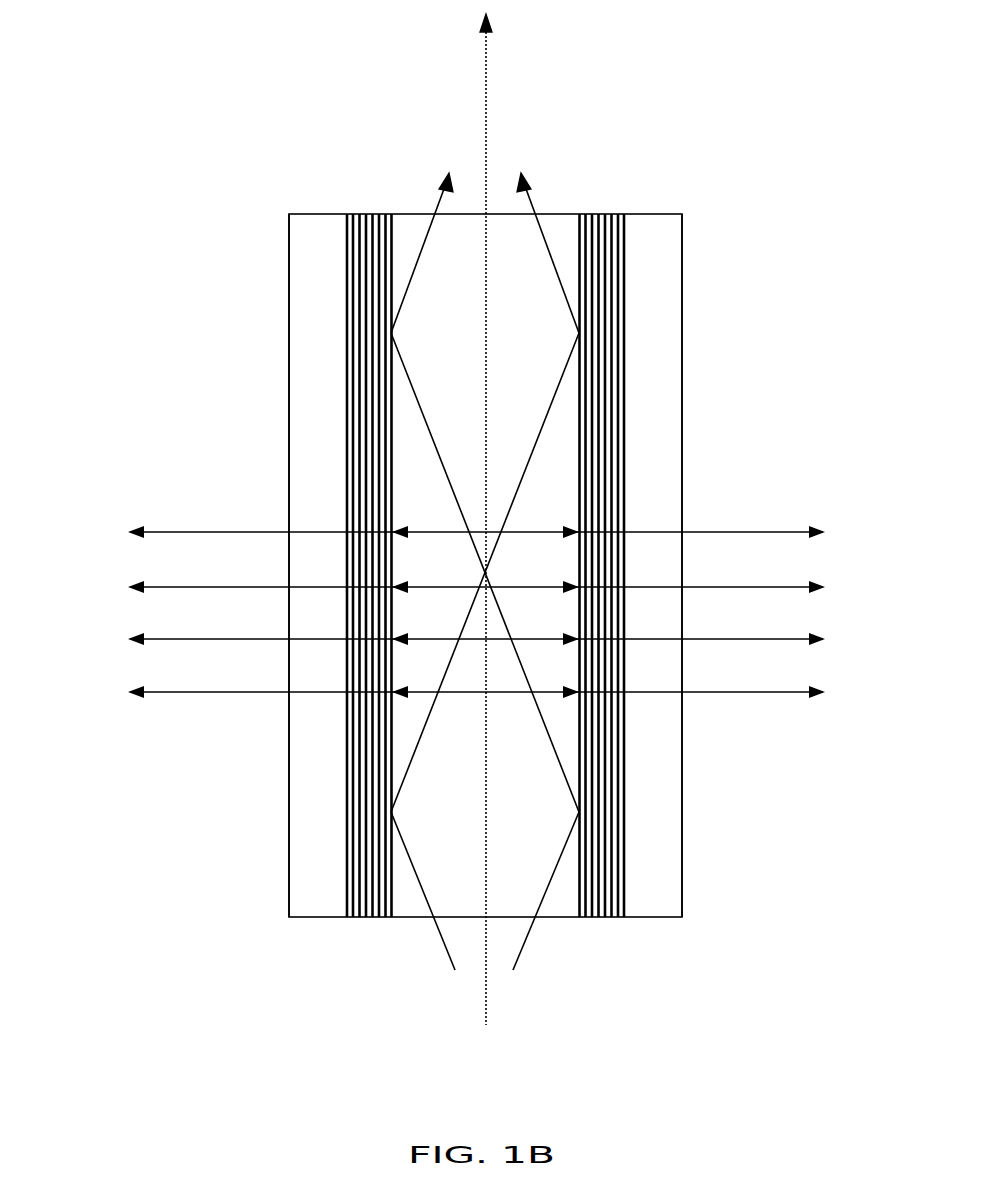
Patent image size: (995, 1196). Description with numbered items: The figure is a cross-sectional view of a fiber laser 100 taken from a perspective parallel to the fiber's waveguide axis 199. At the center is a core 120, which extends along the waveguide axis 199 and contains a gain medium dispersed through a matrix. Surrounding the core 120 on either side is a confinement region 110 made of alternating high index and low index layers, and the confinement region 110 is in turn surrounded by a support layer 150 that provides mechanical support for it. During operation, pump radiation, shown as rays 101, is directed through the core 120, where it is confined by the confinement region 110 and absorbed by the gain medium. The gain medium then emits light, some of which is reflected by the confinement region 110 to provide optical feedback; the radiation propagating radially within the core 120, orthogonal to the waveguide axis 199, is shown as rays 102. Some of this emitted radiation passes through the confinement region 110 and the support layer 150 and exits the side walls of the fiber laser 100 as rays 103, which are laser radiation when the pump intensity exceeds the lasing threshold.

The fiber laser 100 is at (62, 148).
The rays of pump radiation 101 is at (422, 897).
The rays of radially propagating radiation 102 is at (462, 690).
The rays of emitted radiation 103 is at (203, 692).
The confinement region 110 is at (604, 352).
The core 120 is at (513, 272).
The support layer 150 is at (313, 419).
The waveguide axis 199 is at (486, 89).